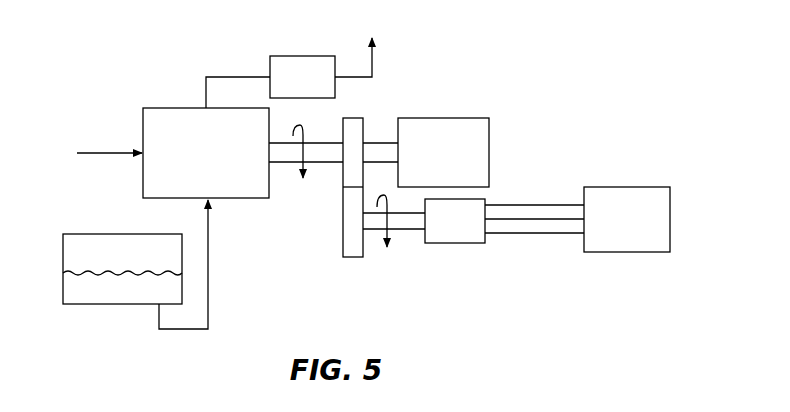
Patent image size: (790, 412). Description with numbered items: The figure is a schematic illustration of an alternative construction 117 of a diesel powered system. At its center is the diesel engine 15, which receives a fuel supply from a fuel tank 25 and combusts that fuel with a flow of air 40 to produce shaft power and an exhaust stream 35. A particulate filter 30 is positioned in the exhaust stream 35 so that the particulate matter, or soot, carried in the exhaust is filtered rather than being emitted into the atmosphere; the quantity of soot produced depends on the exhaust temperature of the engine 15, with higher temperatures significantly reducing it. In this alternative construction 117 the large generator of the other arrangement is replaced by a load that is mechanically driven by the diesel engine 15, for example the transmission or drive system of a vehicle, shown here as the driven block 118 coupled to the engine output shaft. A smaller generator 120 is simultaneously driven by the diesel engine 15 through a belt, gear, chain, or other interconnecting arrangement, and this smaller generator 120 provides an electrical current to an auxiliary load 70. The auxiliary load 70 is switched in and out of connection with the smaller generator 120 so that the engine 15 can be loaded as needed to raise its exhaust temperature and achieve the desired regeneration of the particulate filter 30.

The diesel engine 15 is at (206, 153).
The fuel tank 25 is at (93, 305).
The particulate filter 30 is at (321, 68).
The exhaust stream 35 is at (233, 76).
The flow of air 40 is at (107, 151).
The auxiliary load 70 is at (627, 219).
The alternative construction 117 is at (505, 56).
The first driven component 118 is at (443, 152).
The smaller generator 120 is at (455, 221).